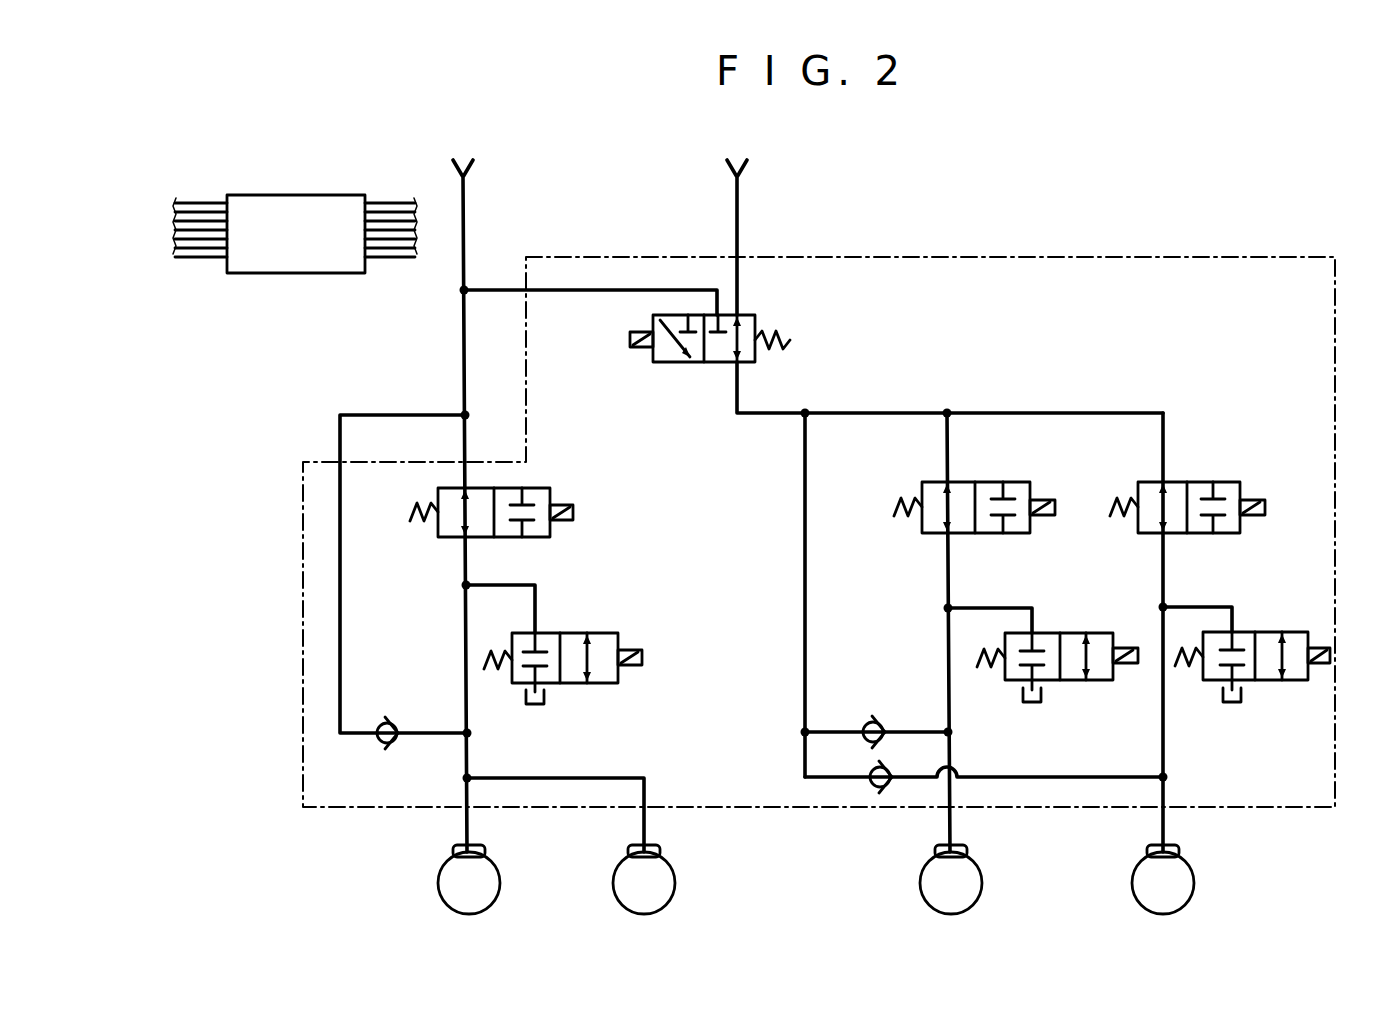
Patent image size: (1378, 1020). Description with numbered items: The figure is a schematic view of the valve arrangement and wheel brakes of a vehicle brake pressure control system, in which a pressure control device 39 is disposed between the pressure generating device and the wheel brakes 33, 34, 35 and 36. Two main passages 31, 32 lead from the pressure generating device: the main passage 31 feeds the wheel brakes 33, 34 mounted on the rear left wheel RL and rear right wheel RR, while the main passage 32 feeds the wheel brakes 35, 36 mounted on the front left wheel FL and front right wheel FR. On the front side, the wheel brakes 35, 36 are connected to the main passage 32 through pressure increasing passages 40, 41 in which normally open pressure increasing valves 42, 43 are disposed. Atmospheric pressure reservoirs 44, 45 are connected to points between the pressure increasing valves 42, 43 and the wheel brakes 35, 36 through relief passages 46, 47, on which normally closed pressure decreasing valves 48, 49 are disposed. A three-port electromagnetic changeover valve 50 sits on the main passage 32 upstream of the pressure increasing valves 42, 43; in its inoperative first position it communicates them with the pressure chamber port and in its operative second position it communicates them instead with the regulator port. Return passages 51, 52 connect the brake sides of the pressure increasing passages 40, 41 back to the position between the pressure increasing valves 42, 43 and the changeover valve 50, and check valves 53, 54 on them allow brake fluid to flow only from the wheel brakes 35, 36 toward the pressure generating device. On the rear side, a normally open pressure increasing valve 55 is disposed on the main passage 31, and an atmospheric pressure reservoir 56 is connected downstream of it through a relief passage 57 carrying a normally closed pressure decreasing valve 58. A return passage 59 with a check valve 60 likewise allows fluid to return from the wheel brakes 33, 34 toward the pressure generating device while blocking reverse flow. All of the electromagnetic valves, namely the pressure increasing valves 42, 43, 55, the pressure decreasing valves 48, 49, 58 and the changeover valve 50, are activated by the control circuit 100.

The control circuit 100 is at (320, 262).
The pressure control device 39 is at (1178, 257).
The main passage 31 is at (465, 228).
The main passage 32 is at (739, 228).
The changeover valve 50 is at (757, 315).
The return passage 59 is at (342, 604).
The check valve 60 is at (397, 745).
The pressure increasing valve 55 is at (503, 488).
The relief passage 57 is at (503, 585).
The pressure decreasing valve 58 is at (573, 633).
The atmospheric pressure reservoir 56 is at (535, 706).
The wheel brake 33 is at (485, 845).
The wheel brake 34 is at (660, 845).
The pressure increasing passage 40 is at (945, 441).
The pressure increasing passage 41 is at (1165, 432).
The pressure increasing valve 42 is at (978, 482).
The pressure increasing valve 43 is at (1200, 534).
The relief passage 46 is at (965, 608).
The relief passage 47 is at (1183, 607).
The pressure decreasing valve 48 is at (1068, 681).
The pressure decreasing valve 49 is at (1262, 681).
The atmospheric pressure reservoir 44 is at (1030, 704).
The atmospheric pressure reservoir 45 is at (1230, 704).
The return passage 51 is at (835, 730).
The return passage 52 is at (835, 777).
The check valve 53 is at (884, 722).
The check valve 54 is at (890, 768).
The wheel brake 35 is at (967, 845).
The wheel brake 36 is at (1179, 845).